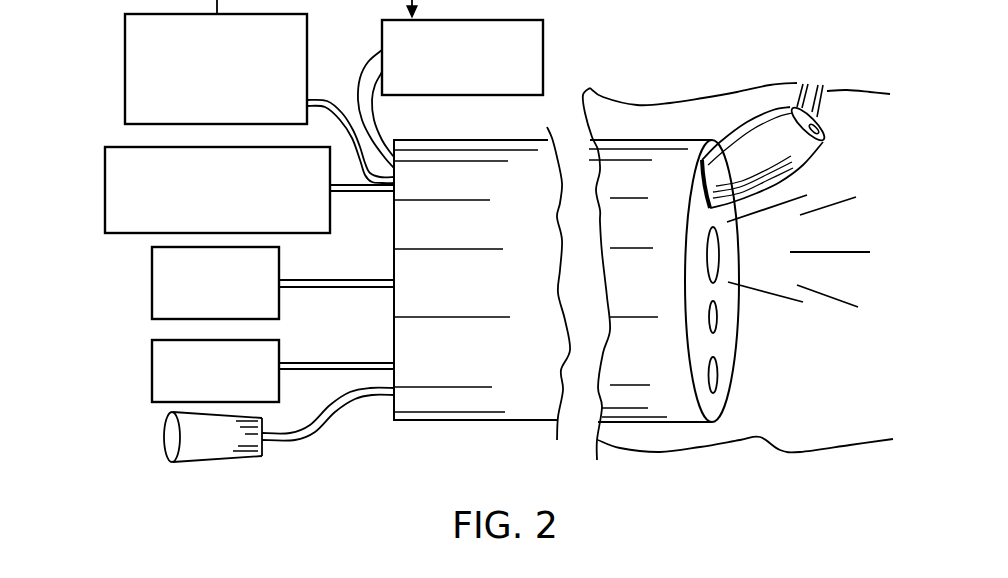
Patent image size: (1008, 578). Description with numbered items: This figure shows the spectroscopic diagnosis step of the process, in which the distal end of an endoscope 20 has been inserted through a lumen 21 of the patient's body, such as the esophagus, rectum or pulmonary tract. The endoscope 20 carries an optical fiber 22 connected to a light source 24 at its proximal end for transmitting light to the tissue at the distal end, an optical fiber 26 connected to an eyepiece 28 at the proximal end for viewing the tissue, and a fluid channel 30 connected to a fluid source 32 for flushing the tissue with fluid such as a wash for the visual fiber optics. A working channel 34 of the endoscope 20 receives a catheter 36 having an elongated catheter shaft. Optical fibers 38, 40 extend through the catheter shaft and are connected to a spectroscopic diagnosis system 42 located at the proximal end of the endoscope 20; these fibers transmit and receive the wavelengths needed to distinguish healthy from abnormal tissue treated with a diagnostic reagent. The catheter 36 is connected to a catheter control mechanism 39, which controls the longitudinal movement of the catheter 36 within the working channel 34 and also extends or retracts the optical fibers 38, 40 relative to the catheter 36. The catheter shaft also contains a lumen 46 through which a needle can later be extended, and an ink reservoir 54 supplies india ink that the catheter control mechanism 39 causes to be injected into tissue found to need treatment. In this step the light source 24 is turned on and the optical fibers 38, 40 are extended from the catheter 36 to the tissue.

The endoscope 20 is at (658, 138).
The lumen 21 is at (777, 442).
The optical fiber 22 is at (719, 256).
The light source 24 is at (152, 281).
The optical fiber 26 is at (717, 318).
The eyepiece 28 is at (170, 437).
The fluid channel 30 is at (718, 376).
The fluid source 32 is at (152, 370).
The working channel 34 is at (702, 158).
The catheter 36 is at (813, 160).
The optical fiber 38 is at (800, 93).
The catheter control mechanism 39 is at (125, 63).
The optical fiber 40 is at (823, 103).
The spectroscopic diagnosis system 42 is at (105, 189).
The lumen 46 is at (827, 130).
The ink reservoir 54 is at (543, 57).